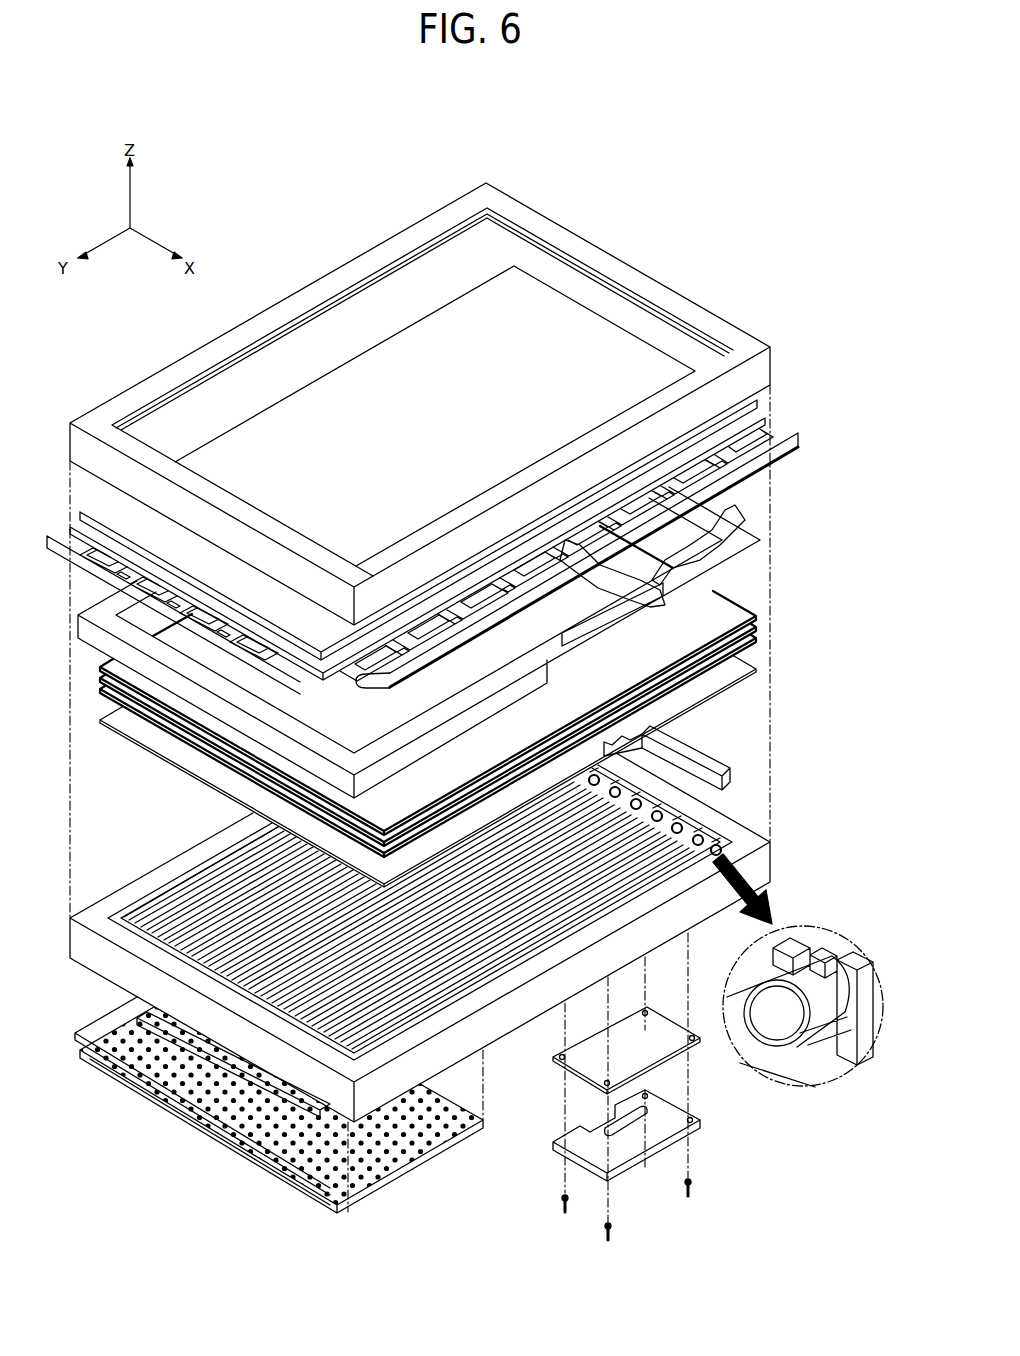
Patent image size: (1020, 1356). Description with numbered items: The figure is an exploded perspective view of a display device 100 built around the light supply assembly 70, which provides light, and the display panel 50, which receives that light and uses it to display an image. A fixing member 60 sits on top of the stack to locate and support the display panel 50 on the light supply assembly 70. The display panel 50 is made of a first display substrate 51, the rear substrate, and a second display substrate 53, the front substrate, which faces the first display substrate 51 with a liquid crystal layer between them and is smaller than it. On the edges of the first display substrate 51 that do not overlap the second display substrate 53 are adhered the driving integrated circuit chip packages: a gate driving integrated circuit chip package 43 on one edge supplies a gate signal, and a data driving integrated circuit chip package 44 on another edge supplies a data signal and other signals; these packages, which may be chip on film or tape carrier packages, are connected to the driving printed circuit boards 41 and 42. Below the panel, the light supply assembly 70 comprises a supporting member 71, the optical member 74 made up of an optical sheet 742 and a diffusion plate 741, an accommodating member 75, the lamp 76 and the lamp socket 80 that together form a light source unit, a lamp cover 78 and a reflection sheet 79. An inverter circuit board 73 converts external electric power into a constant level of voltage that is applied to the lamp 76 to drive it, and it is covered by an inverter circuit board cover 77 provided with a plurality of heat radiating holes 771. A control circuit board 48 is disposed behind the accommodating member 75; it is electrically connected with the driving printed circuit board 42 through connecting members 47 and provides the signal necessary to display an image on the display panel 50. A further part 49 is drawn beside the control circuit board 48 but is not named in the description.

The display device 100 is at (351, 187).
The fixing member 60 is at (768, 362).
The display panel 50 is at (487, 520).
The second display substrate 53 is at (758, 399).
The first display substrate 51 is at (766, 420).
The driving printed circuit board 42 is at (800, 440).
The data driving integrated circuit chip package 44 is at (800, 453).
The driving printed circuit board 41 is at (205, 638).
The gate driving integrated circuit chip package 43 is at (260, 652).
The connecting members 47 is at (662, 572).
The light supply assembly 70 is at (484, 833).
The supporting member 71 is at (762, 541).
The optical member 74 is at (476, 706).
The optical sheet 742 is at (760, 615).
The diffusion plate 741 is at (742, 682).
The accommodating member 75 is at (764, 877).
The reflection sheet 79 is at (737, 847).
The lamp socket 80 is at (690, 815).
The lamp 76 is at (668, 750).
The lamp cover 78 is at (495, 953).
The inverter circuit board 73 is at (160, 1020).
The inverter circuit board cover 77 is at (333, 1200).
The heat radiating holes 771 is at (170, 1085).
The control circuit board 48 is at (640, 1050).
The inverter cover 49 is at (665, 1122).